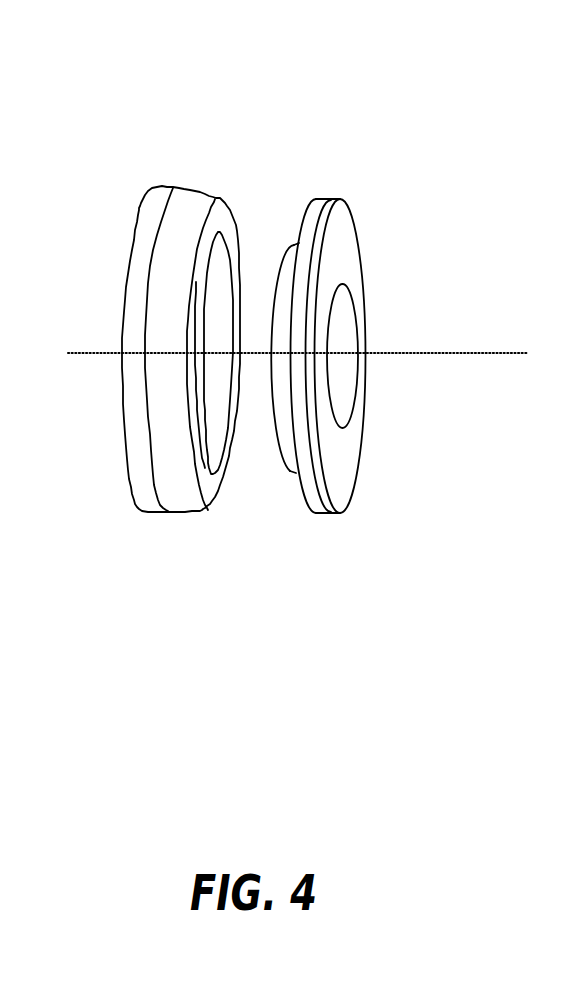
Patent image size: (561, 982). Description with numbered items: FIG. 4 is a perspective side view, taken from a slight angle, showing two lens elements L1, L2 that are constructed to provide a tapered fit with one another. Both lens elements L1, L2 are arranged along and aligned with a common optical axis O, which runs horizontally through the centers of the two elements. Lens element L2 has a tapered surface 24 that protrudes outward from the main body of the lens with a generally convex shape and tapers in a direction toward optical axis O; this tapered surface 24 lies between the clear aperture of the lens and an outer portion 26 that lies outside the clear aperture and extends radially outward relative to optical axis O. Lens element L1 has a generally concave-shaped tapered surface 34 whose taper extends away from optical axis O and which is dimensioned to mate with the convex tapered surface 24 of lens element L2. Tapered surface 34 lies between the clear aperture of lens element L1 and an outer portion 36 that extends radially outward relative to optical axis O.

The tapered surface 24 is at (290, 247).
The outer portion 26 is at (329, 200).
The tapered surface 34 is at (215, 432).
The outer portion 36 is at (165, 192).
The lens element L1 is at (188, 408).
The lens element L2 is at (350, 273).
The optical axis O is at (428, 353).